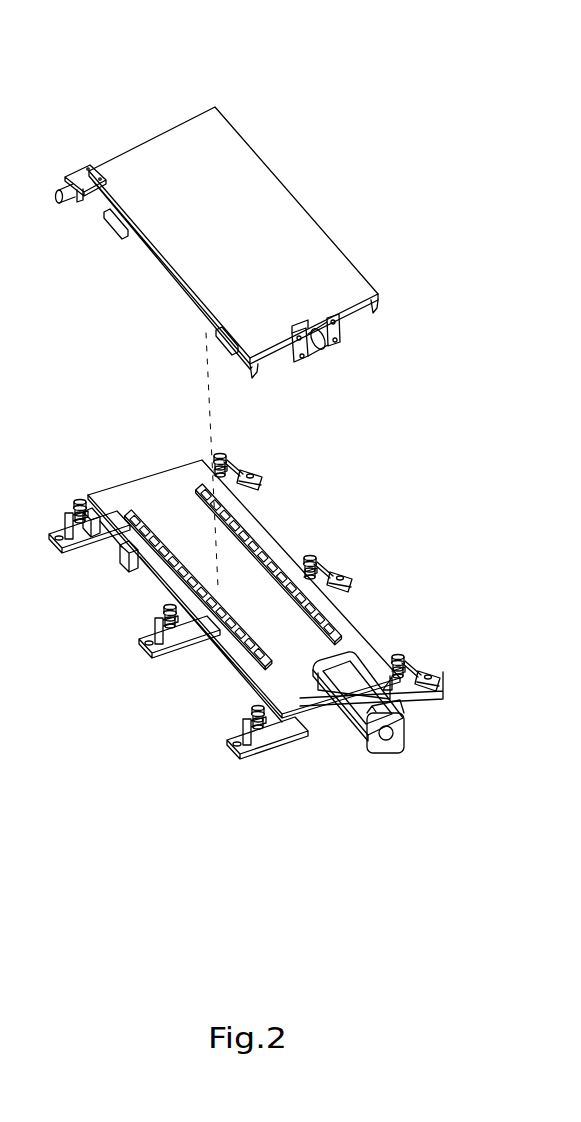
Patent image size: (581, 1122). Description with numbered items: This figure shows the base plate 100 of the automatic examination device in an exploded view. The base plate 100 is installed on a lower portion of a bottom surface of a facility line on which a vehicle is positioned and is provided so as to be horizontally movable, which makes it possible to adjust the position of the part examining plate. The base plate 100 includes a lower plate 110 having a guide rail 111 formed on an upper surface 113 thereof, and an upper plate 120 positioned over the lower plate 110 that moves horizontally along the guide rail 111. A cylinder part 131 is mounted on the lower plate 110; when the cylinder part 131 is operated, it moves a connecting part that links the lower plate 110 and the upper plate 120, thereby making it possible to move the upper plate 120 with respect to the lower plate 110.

The base plate 100 is at (91, 68).
The lower plate 110 is at (227, 667).
The guide rail 111 is at (150, 568).
The upper surface 113 is at (360, 648).
The upper plate 120 is at (163, 247).
The cylinder part 131 is at (352, 727).